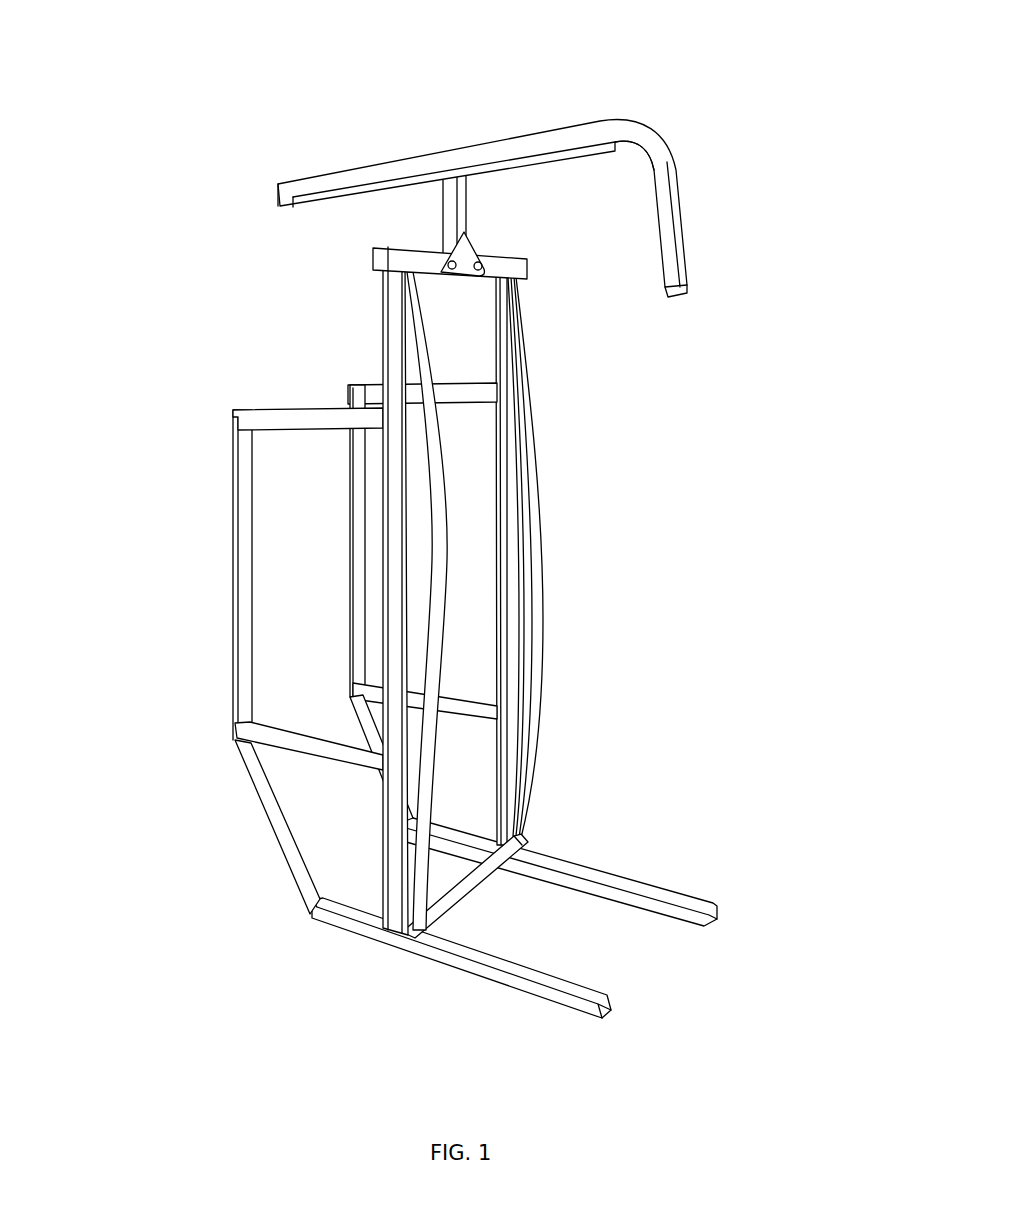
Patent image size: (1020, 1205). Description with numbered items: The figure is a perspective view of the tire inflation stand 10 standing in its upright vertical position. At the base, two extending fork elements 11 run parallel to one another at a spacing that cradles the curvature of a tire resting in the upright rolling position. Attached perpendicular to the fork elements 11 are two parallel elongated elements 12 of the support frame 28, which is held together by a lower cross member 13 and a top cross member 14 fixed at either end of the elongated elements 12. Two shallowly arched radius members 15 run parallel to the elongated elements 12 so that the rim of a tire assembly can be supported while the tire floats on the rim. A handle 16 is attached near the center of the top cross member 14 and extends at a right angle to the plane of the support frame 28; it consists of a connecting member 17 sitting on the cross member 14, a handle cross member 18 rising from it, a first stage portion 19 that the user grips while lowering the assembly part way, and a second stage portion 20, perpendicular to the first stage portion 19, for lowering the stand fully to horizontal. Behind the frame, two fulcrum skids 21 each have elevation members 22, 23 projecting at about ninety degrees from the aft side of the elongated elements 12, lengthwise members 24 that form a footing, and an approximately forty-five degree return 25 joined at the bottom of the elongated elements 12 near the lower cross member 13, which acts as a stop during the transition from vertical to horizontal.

The tire inflation stand 10 is at (160, 155).
The extending fork elements 11 is at (610, 1007).
The elongated elements 12 is at (500, 355).
The lower cross member 13 is at (525, 852).
The top cross member 14 is at (505, 265).
The shallowly arched radius members 15 is at (442, 548).
The handle 16 is at (516, 158).
The connecting member 17 is at (442, 252).
The handle cross member 18 is at (466, 207).
The first stage portion 19 is at (310, 178).
The second stage portion 20 is at (683, 233).
The fulcrum skids 21 is at (345, 448).
The elevation member 22 is at (363, 396).
The elevation member 23 is at (350, 693).
The lengthwise members 24 is at (357, 507).
The return 25 is at (367, 717).
The support frame 28 is at (276, 609).